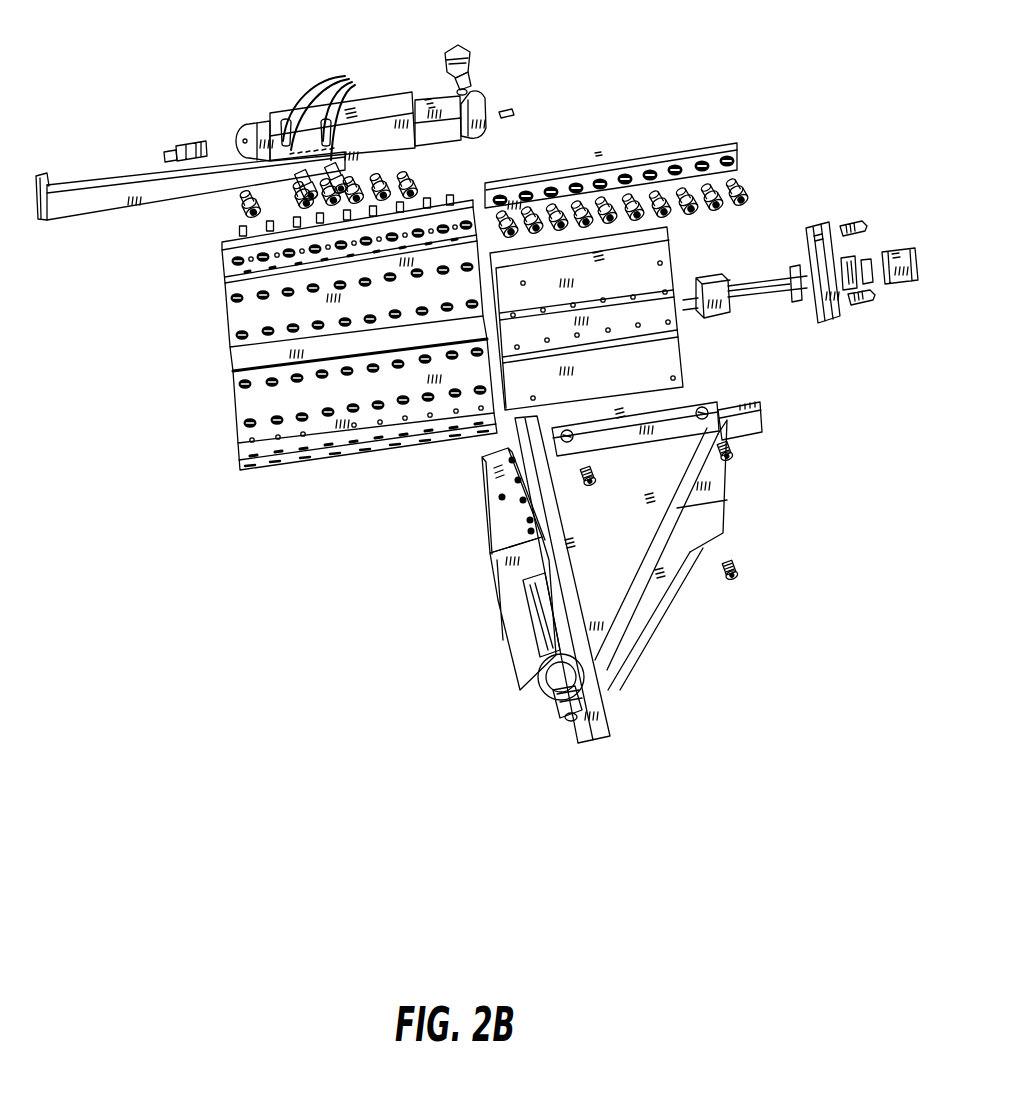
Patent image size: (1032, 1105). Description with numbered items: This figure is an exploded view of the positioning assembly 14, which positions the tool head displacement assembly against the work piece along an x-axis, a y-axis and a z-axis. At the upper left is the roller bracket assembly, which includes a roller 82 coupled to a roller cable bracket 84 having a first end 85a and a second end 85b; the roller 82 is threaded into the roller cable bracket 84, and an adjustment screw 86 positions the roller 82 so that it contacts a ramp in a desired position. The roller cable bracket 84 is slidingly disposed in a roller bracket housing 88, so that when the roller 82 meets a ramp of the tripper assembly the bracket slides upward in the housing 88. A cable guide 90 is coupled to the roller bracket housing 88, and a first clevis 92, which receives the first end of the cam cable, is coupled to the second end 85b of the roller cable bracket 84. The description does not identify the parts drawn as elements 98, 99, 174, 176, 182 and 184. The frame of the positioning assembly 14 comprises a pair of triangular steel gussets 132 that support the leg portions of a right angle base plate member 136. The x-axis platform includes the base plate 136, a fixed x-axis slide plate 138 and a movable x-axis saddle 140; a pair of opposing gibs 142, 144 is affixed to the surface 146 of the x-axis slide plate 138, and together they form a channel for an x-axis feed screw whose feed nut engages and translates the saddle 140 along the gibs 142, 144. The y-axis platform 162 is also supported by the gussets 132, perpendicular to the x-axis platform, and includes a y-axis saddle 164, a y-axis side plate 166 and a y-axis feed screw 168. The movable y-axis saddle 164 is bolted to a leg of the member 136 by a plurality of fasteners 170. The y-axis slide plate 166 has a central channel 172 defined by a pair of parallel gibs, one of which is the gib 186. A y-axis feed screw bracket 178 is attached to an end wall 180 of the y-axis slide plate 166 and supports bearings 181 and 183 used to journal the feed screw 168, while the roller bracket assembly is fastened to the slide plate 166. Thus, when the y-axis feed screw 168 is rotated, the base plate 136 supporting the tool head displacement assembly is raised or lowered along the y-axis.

The positioning assembly 14 is at (615, 567).
The roller 82 is at (468, 50).
The roller cable bracket 84 is at (440, 137).
The first end 85a is at (482, 132).
The second end 85b is at (242, 128).
The adjustment screw 86 is at (512, 110).
The roller bracket housing 88 is at (367, 133).
The cable guide 90 is at (112, 186).
The first clevis 92 is at (186, 142).
The hose fitting 98 is at (282, 122).
The hoses 99 is at (326, 110).
The triangular steel gussets 132 is at (661, 567).
The right angle base plate member 136 is at (620, 596).
The fixed x-axis slide plate 138 is at (610, 672).
The movable x-axis saddle 140 is at (490, 617).
The first opposing gib 142 is at (527, 593).
The second opposing gib 144 is at (510, 660).
The surface 146 is at (492, 543).
The y-axis platform 162 is at (740, 416).
The y-axis saddle 164 is at (712, 394).
The y-axis side plate 166 is at (243, 402).
The y-axis feed screw 168 is at (773, 281).
The fasteners 170 is at (582, 480).
The central channel 172 is at (237, 362).
The top plate 174 is at (222, 272).
The bottom plate 176 is at (238, 461).
The y-axis feed screw bracket 178 is at (816, 226).
The end wall 180 is at (685, 343).
The bearing 181 is at (848, 258).
The bearing block 182 is at (704, 276).
The bearing 183 is at (795, 300).
The set screw 184 is at (850, 222).
The gib 186 is at (680, 153).